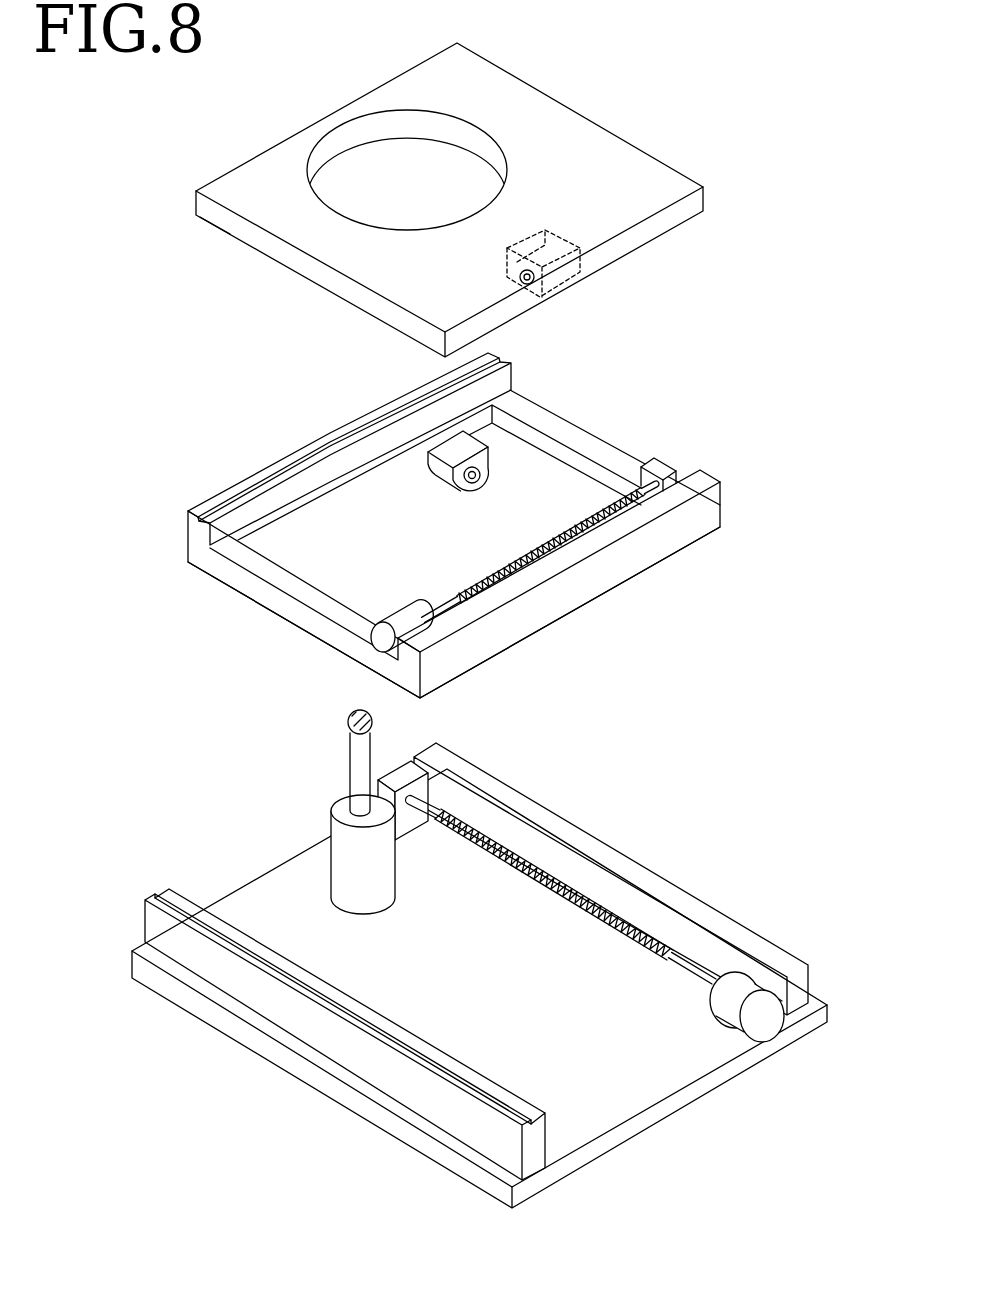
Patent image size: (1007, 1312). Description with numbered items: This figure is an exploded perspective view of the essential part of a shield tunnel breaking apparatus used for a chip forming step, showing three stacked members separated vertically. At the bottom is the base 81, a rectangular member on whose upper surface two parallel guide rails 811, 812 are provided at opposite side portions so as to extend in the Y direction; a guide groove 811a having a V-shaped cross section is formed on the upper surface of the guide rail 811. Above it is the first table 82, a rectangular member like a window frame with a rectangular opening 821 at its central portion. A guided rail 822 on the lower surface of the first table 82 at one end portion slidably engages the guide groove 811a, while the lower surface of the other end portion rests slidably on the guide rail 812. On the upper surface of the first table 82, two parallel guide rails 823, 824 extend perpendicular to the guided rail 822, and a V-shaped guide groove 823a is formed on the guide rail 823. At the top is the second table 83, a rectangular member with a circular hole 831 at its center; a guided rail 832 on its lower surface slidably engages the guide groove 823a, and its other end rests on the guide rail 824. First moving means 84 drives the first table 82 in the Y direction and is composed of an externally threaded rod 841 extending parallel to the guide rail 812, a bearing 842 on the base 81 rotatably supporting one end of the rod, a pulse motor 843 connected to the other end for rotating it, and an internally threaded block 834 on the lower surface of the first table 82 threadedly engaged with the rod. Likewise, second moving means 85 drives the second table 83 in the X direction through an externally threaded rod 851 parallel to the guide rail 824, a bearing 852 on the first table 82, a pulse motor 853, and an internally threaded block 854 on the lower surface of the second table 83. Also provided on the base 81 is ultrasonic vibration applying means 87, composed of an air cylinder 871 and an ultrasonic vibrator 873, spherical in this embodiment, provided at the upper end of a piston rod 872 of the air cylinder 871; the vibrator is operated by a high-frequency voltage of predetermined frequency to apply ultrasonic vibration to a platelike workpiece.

The base 81 is at (288, 1100).
The guide rail 811 is at (363, 1044).
The guide groove 811a is at (524, 1111).
The guide rail 812 is at (734, 927).
The first table 82 is at (615, 411).
The rectangular opening 821 is at (326, 577).
The guided rail 822 is at (428, 696).
The guide rail 823 is at (310, 454).
The guide groove 823a is at (227, 505).
The guide rail 824 is at (622, 574).
The second table 83 is at (602, 115).
The circular hole 831 is at (452, 138).
The guided rail 832 is at (212, 222).
The internally threaded block 834 is at (490, 472).
The first moving means 84 is at (605, 927).
The externally threaded rod 841 is at (588, 907).
The bearing 842 is at (409, 810).
The pulse motor 843 is at (772, 1018).
The second moving means 85 is at (504, 566).
The externally threaded rod 851 is at (520, 565).
The bearing 852 is at (669, 469).
The pulse motor 853 is at (398, 622).
The internally threaded block 854 is at (560, 294).
The ultrasonic vibration applying means 87 is at (312, 808).
The air cylinder 871 is at (345, 882).
The piston rod 872 is at (350, 788).
The ultrasonic vibrator 873 is at (347, 722).